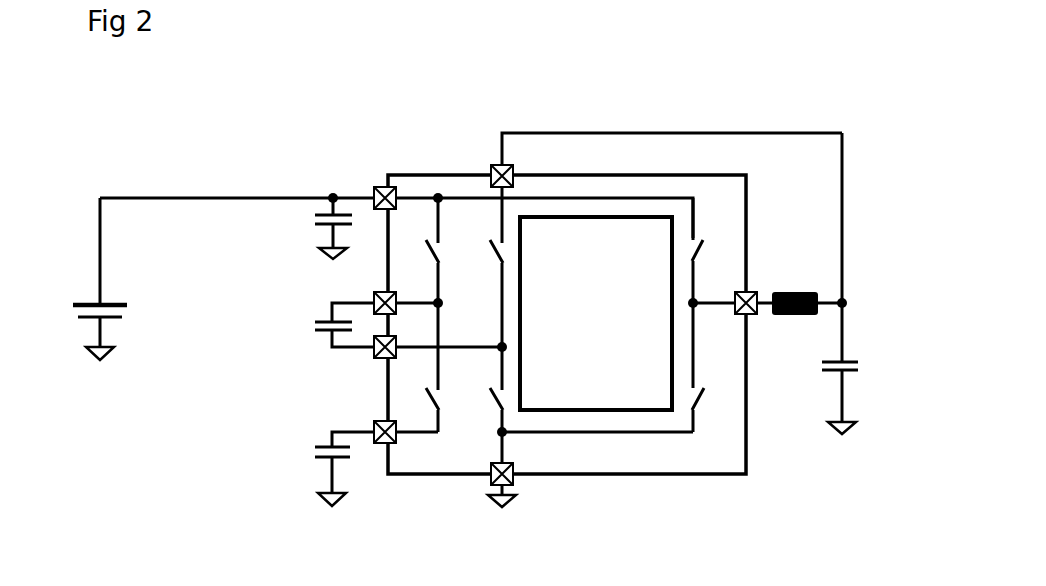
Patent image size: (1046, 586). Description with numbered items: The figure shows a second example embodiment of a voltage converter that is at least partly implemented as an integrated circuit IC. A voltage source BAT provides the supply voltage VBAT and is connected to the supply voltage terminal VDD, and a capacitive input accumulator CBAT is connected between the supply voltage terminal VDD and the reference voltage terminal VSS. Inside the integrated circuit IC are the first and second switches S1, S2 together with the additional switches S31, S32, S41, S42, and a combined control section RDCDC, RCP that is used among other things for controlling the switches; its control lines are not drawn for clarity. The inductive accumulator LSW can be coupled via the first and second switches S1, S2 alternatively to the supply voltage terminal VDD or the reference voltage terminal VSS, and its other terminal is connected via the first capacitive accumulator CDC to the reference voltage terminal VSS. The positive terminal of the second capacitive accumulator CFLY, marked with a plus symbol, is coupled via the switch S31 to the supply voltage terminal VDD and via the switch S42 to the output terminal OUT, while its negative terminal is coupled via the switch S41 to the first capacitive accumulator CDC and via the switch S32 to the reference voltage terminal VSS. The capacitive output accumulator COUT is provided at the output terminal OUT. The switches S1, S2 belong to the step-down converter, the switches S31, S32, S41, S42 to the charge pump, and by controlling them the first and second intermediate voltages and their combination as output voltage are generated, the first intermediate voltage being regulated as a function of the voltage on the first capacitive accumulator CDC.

The integrated circuit IC is at (608, 475).
The supply voltage VBAT is at (237, 188).
The voltage source BAT is at (122, 318).
The capacitive input accumulator CBAT is at (315, 225).
The supply voltage terminal VDD is at (379, 186).
The switch S31 is at (428, 248).
The switch S41 is at (491, 248).
The second capacitive accumulator CFLY is at (315, 328).
The switch S42 is at (427, 398).
The switch S32 is at (490, 398).
The output terminal OUT is at (373, 422).
The capacitive output accumulator COUT is at (318, 458).
The combined control section RDCDC is at (596, 313).
The combined control section RCP is at (596, 328).
The first switch S1 is at (699, 253).
The second switch S2 is at (705, 392).
The inductive accumulator LSW is at (797, 290).
The first capacitive accumulator CDC is at (827, 375).
The reference voltage terminal VSS is at (323, 257).